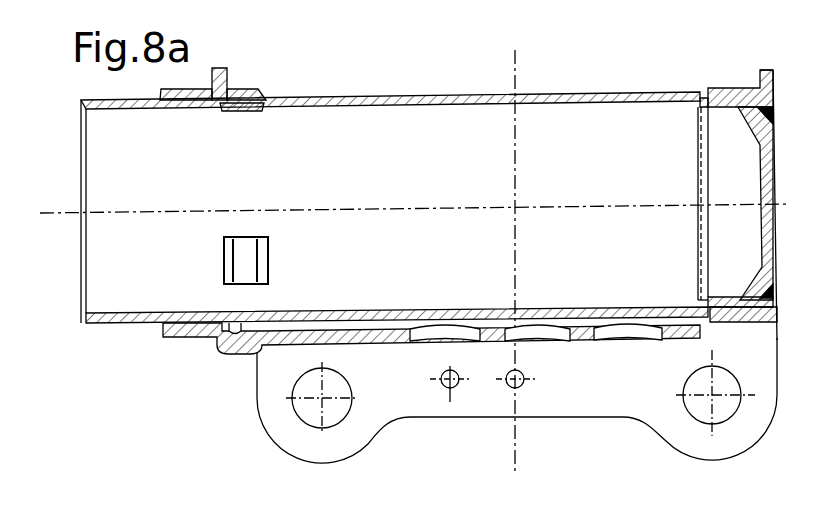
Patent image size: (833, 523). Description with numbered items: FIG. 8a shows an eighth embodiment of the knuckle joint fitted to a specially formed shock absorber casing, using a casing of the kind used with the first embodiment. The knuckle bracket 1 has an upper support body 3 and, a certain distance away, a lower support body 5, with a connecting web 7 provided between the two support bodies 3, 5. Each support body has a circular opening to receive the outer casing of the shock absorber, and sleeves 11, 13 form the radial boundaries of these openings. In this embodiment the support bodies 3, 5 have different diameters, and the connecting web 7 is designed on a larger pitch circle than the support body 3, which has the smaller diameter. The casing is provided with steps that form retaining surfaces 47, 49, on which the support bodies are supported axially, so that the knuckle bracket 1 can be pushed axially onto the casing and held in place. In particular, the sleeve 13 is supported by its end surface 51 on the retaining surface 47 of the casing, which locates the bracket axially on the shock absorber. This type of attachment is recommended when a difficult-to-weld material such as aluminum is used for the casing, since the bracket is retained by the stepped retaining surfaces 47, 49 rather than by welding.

The knuckle bracket 1 is at (470, 56).
The upper support body 3 is at (243, 62).
The lower support body 5 is at (788, 50).
The connecting web 7 is at (370, 342).
The sleeve 11 is at (180, 88).
The sleeve 13 is at (739, 88).
The retaining surface 47 is at (698, 106).
The retaining surface 49 is at (258, 90).
The end surface 51 is at (706, 96).